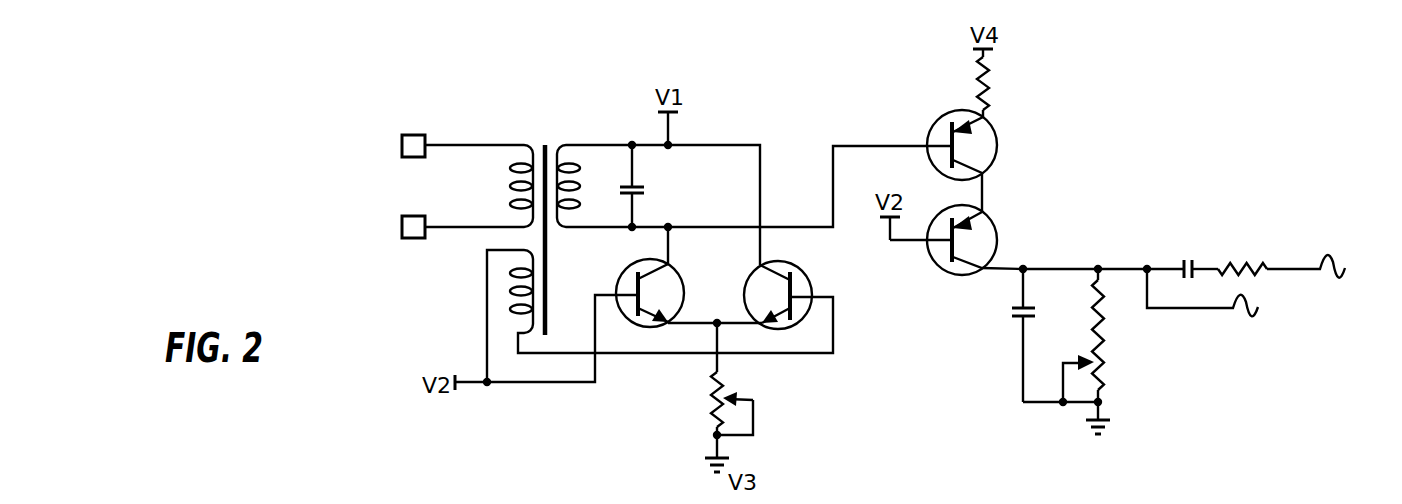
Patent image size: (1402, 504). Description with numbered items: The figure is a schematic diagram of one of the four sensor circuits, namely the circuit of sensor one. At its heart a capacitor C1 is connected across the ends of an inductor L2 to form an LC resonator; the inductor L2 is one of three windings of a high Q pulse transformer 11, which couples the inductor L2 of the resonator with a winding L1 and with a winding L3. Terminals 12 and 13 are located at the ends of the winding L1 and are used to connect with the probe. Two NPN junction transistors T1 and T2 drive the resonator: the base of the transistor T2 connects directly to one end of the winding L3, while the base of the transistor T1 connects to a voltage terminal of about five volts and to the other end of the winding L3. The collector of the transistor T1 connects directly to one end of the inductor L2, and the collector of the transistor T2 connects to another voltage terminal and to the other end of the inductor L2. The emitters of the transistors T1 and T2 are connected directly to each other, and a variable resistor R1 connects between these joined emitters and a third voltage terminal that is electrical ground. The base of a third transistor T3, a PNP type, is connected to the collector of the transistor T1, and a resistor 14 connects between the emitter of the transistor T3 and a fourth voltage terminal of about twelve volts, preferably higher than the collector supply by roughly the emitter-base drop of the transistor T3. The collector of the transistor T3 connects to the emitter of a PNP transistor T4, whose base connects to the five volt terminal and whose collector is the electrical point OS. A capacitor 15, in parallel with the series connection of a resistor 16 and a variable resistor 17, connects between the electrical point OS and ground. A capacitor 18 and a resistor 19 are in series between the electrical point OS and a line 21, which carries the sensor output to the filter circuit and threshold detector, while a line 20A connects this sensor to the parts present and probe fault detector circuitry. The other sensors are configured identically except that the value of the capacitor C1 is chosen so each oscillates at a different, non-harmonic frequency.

The pulse transformer 11 is at (547, 128).
The terminal 12 is at (402, 145).
The terminal 13 is at (402, 226).
The resistor 14 is at (985, 80).
The capacitor 15 is at (1022, 322).
The resistor 16 is at (1093, 300).
The variable resistor 17 is at (1104, 380).
The capacitor 18 is at (1187, 256).
The resistor 19 is at (1248, 261).
The line 20A is at (1197, 312).
The line 21 is at (1293, 267).
The winding L1 is at (508, 189).
The inductor L2 is at (579, 188).
The winding L3 is at (510, 290).
The capacitor C1 is at (641, 187).
The variable resistor R1 is at (713, 390).
The transistor T1 is at (633, 265).
The transistor T2 is at (808, 275).
The third transistor T3 is at (996, 135).
The transistor T4 is at (996, 230).
The electrical point OS is at (1147, 268).